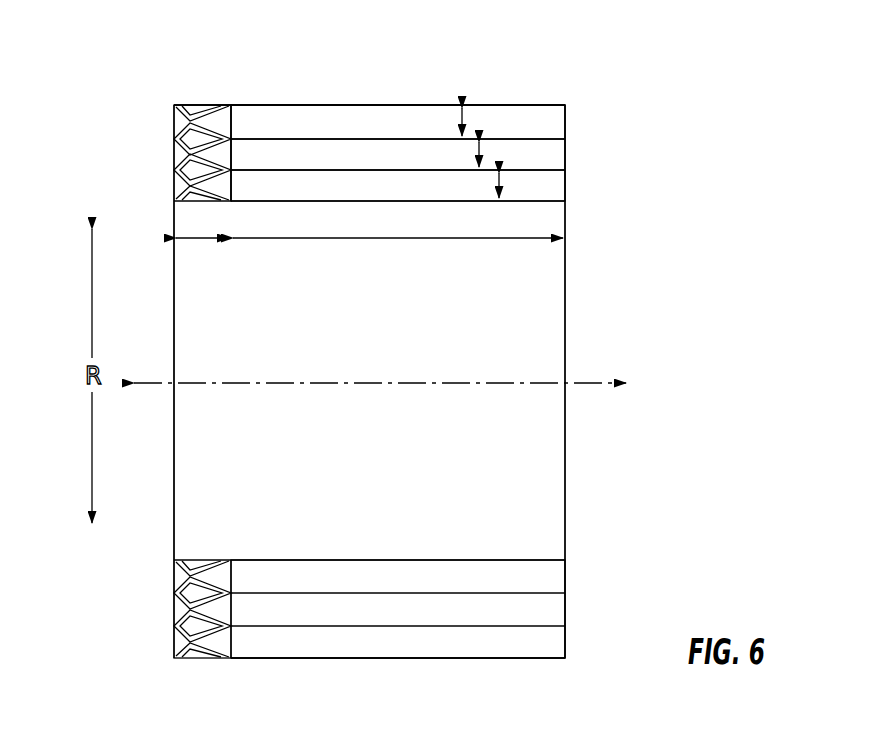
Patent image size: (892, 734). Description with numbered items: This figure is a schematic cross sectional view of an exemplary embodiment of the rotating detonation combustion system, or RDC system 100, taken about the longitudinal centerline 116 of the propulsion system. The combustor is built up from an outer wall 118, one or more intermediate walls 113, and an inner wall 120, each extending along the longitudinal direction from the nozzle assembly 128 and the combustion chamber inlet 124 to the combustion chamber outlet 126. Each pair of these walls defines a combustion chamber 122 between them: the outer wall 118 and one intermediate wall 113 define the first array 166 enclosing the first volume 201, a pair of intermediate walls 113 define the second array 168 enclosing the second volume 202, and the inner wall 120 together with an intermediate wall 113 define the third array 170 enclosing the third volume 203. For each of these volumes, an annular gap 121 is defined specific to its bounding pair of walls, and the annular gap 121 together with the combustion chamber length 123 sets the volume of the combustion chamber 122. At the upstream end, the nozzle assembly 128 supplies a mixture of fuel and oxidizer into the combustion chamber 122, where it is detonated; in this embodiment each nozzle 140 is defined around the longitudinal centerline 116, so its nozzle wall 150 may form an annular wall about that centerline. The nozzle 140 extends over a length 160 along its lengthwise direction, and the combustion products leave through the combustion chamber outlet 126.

The RDC system 100 is at (718, 124).
The intermediate wall 113 is at (556, 167).
The longitudinal centerline 116 is at (553, 380).
The outer wall 118 is at (350, 105).
The inner wall 120 is at (395, 560).
The annular gap 121 is at (503, 185).
The combustion chamber 122 is at (427, 135).
The combustion chamber length 123 is at (378, 240).
The combustion chamber inlet 124 is at (233, 135).
The combustion chamber outlet 126 is at (562, 130).
The nozzle assembly 128 is at (168, 90).
The nozzle 140 is at (178, 128).
The nozzle wall 150 is at (207, 107).
The length 160 is at (208, 240).
The first array 166 is at (539, 648).
The second array 168 is at (539, 615).
The third array 170 is at (539, 577).
The first volume 201 is at (398, 121).
The second volume 202 is at (398, 154).
The third volume 203 is at (398, 186).